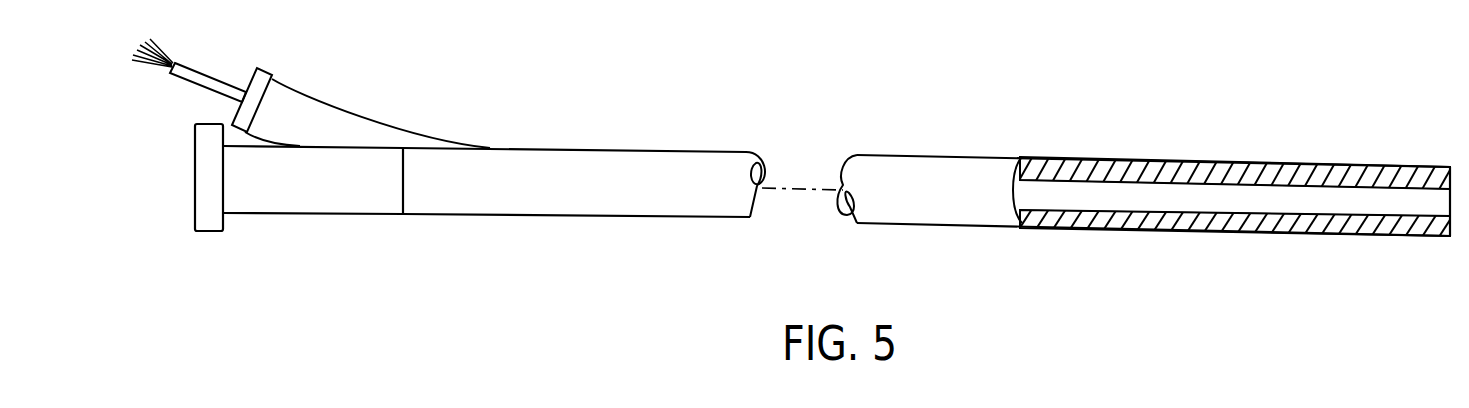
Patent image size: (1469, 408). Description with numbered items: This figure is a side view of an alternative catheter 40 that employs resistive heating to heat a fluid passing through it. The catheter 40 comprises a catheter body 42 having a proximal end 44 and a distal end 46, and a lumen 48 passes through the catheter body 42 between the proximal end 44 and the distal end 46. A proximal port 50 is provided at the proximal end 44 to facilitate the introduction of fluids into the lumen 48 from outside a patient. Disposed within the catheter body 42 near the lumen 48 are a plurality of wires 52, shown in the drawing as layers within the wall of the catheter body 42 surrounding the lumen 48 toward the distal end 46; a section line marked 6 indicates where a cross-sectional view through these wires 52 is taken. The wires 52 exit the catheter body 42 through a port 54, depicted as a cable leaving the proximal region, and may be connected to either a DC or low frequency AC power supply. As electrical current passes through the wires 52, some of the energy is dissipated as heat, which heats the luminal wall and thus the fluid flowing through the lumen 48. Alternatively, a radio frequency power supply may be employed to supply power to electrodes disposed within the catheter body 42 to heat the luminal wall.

The catheter 40 is at (719, 107).
The catheter body 42 is at (557, 168).
The proximal end 44 is at (425, 200).
The distal end 46 is at (1367, 228).
The lumen 48 is at (1053, 189).
The proximal port 50 is at (290, 193).
The wires 52 is at (1115, 218).
The port 54 is at (330, 107).
The section line 6- 6 is at (1221, 201).